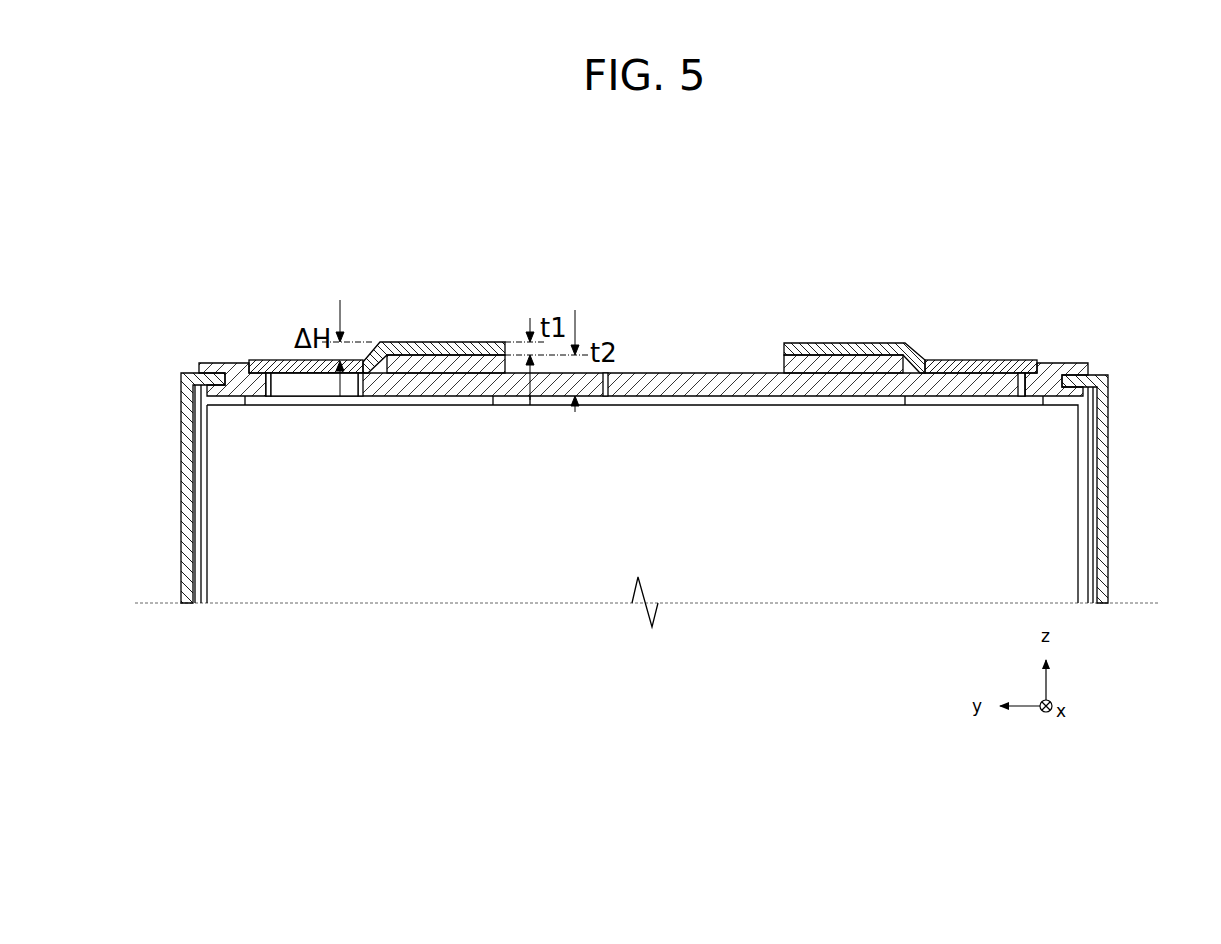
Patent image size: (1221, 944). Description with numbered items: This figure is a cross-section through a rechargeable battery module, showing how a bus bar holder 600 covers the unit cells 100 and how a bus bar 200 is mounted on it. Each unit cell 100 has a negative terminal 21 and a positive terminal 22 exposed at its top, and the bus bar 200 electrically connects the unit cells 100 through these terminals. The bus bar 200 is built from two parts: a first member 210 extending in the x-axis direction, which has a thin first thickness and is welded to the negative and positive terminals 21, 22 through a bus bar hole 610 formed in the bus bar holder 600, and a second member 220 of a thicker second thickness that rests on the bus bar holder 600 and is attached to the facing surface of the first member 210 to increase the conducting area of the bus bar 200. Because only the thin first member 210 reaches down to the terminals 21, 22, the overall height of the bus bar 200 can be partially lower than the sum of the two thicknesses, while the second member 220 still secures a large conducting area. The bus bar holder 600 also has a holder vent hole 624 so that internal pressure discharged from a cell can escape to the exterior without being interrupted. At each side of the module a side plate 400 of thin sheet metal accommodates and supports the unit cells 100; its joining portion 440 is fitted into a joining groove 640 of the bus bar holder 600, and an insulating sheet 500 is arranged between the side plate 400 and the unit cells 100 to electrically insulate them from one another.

The unit cell 100 is at (828, 572).
The negative terminal 21 is at (290, 383).
The positive terminal 22 is at (952, 365).
The bus bar 200 is at (434, 300).
The first member 210 is at (405, 347).
The second member 220 is at (463, 365).
The side plate 400 is at (1112, 512).
The joining portion 440 is at (1092, 398).
The insulating sheet 500 is at (200, 552).
The bus bar holder 600 is at (690, 393).
The bus bar hole 610 is at (350, 397).
The holder vent hole 624 is at (632, 375).
The joining groove 640 is at (1085, 382).